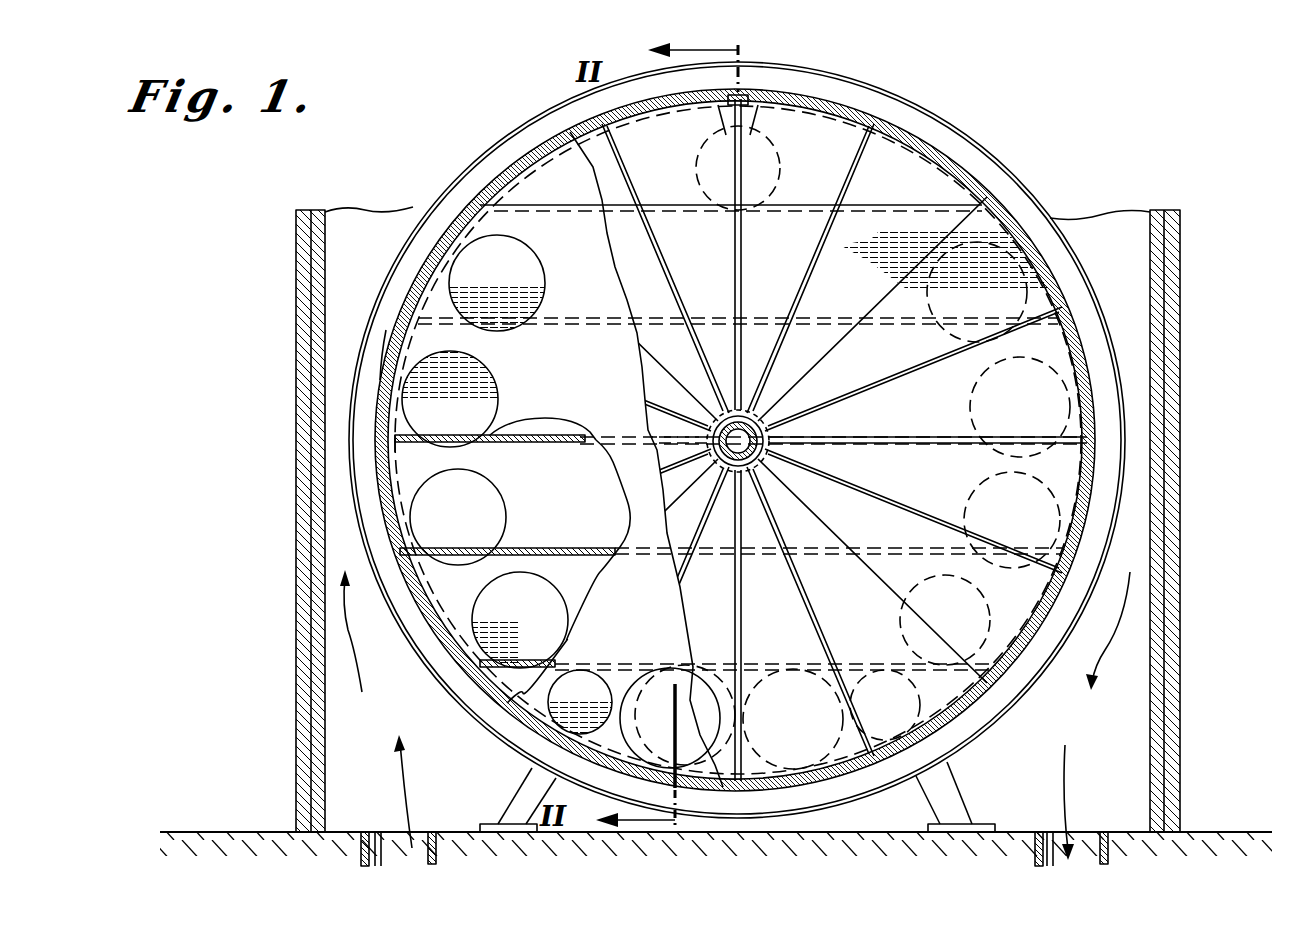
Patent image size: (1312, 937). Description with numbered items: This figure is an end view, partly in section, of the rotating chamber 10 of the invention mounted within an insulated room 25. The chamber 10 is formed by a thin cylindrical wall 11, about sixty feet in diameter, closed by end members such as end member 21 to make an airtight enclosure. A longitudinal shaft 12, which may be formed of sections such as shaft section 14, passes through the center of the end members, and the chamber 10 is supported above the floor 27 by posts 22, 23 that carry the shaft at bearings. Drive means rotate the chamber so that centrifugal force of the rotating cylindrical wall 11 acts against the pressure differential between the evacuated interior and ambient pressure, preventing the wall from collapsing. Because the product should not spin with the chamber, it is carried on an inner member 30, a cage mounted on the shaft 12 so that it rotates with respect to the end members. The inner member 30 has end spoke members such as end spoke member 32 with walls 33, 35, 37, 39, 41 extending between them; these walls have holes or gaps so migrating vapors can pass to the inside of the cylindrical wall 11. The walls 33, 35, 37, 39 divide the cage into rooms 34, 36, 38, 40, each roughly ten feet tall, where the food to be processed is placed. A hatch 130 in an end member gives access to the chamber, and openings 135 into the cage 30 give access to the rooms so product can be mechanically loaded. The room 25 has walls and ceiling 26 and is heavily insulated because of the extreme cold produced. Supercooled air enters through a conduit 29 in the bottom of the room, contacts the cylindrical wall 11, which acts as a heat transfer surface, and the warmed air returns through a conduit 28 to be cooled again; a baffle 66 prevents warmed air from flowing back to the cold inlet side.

The chamber 10 is at (1008, 100).
The cylindrical wall 11 is at (385, 358).
The longitudinal shaft 12 is at (668, 398).
The shaft section 14 is at (768, 448).
The end member 21 is at (965, 392).
The post 22 is at (520, 792).
The post 23 is at (933, 785).
The insulated room 25 is at (1132, 680).
The walls and ceiling 26 is at (1178, 420).
The floor 27 is at (1142, 832).
The conduit 28 is at (1085, 830).
The conduit 29 is at (378, 832).
The inner member 30 is at (996, 180).
The end spoke member 32 is at (1048, 345).
The wall 33 is at (795, 205).
The room 34 is at (533, 228).
The wall 35 is at (836, 320).
The room 36 is at (392, 312).
The wall 37 is at (545, 445).
The room 38 is at (410, 463).
The wall 39 is at (858, 585).
The room 40 is at (465, 598).
The wall 41 is at (760, 656).
The baffle 66 is at (772, 808).
The hatch 130 is at (655, 692).
The opening 135 is at (545, 290).